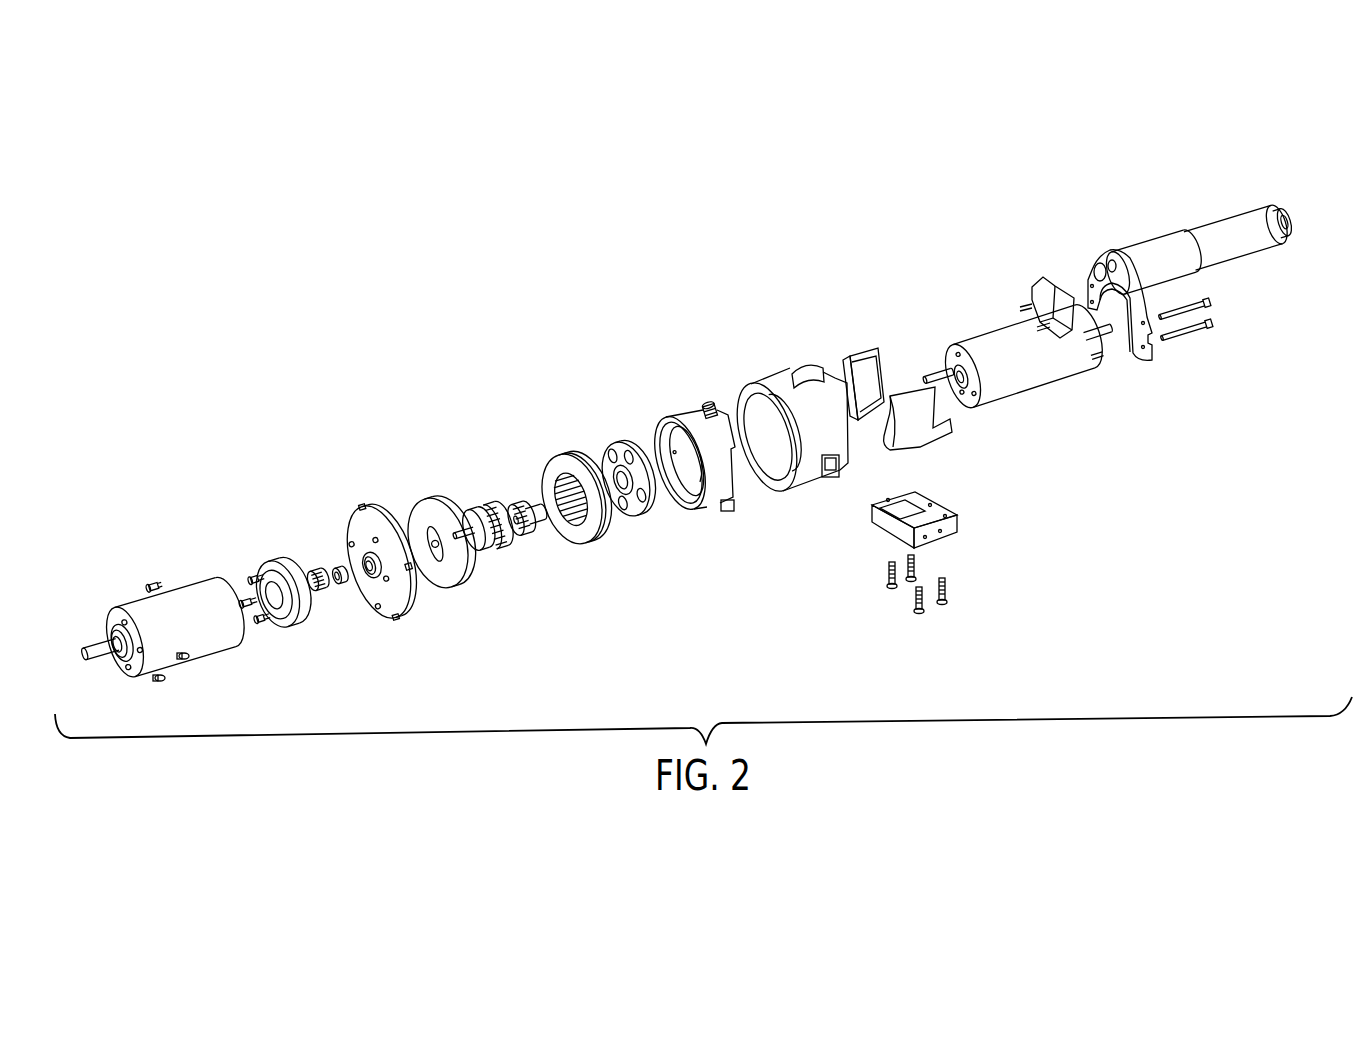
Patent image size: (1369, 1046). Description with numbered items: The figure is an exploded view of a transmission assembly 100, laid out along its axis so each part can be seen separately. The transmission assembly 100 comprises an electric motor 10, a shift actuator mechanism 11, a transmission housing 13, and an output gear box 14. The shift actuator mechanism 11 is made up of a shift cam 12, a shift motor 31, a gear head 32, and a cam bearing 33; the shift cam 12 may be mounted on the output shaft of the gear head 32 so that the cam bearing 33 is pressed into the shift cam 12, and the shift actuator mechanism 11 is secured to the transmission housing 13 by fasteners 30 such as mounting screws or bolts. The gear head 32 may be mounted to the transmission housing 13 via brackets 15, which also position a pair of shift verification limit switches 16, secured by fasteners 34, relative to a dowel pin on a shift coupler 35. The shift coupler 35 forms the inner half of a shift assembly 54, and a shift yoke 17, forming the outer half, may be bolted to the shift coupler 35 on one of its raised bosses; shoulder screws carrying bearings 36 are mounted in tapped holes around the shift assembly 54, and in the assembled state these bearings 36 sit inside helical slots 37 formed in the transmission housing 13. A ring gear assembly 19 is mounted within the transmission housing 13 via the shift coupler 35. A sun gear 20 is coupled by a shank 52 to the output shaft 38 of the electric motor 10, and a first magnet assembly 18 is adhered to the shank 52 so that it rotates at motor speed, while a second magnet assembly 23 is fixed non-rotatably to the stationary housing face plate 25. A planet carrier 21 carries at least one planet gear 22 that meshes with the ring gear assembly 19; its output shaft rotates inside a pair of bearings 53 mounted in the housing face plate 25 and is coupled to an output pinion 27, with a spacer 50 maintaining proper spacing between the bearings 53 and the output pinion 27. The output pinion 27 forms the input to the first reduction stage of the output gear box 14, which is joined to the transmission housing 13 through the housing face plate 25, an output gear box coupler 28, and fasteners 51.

The transmission assembly 100 is at (270, 341).
The electric motor 10 is at (1040, 380).
The shift actuator mechanism 11 is at (1200, 252).
The shift cam 12 is at (1043, 285).
The transmission housing 13 is at (787, 410).
The output gear box 14 is at (216, 650).
The brackets 15 is at (893, 397).
The shift verification limit switches 16 is at (878, 522).
The shift yoke 17 is at (683, 451).
The first magnet assembly 18 is at (638, 517).
The ring gear assembly 19 is at (562, 452).
The sun gear 20 is at (530, 527).
The planet carrier 21 is at (472, 512).
The planet gear 22 is at (503, 538).
The second magnet assembly 23 is at (453, 587).
The housing face plate 25 is at (358, 505).
The output pinion 27 is at (312, 570).
The output gear box coupler 28 is at (290, 627).
The fasteners 30 is at (1197, 337).
The shift motor 31 is at (1247, 259).
The gear head 32 is at (1148, 242).
The cam bearing 33 is at (1103, 266).
The fasteners 34 is at (942, 607).
The shift coupler 35 is at (692, 477).
The bearings 36 is at (710, 404).
The helical slots 37 is at (808, 368).
The output shaft 38 is at (933, 378).
The spacer 50 is at (340, 586).
The fasteners 51 is at (148, 580).
The shank 52 is at (533, 502).
The bearings 53 is at (374, 583).
The shift assembly 54 is at (688, 410).